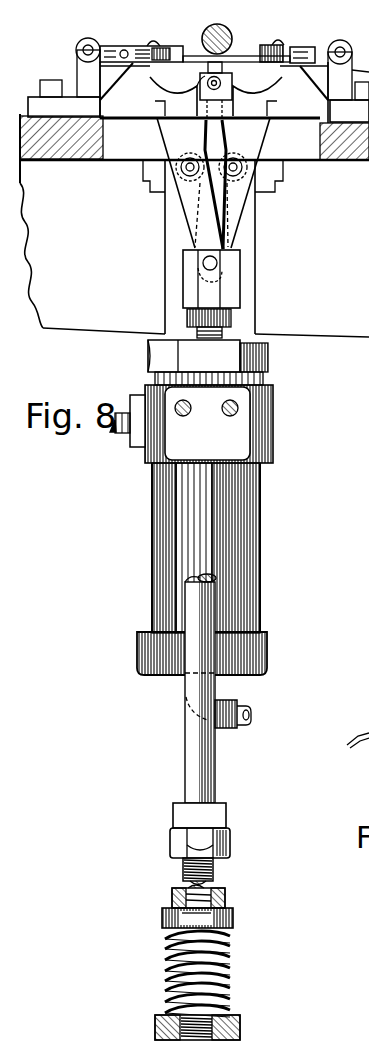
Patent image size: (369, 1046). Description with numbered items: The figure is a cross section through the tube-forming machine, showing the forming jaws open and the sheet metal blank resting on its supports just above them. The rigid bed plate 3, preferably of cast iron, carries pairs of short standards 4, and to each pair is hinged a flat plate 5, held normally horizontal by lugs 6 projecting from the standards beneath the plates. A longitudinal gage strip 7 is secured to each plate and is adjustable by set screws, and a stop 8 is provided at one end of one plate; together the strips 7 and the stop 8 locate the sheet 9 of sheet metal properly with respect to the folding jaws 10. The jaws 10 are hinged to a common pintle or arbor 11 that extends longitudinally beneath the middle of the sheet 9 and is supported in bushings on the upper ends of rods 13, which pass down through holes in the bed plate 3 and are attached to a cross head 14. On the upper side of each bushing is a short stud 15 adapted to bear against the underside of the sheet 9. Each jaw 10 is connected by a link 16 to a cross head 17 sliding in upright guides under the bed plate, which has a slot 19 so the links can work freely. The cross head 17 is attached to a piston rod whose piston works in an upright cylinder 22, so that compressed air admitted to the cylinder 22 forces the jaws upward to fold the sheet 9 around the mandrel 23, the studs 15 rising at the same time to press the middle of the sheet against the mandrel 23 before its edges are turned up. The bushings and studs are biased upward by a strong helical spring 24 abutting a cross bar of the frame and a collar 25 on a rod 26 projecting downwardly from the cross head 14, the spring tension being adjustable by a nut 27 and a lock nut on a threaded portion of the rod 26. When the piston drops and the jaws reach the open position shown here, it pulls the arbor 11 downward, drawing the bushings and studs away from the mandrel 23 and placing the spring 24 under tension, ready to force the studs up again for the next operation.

The bed plate 3 is at (366, 178).
The short standards 4 is at (78, 67).
The flat plate 5 is at (120, 46).
The lugs 6 is at (108, 85).
The longitudinal gage strip 7 is at (264, 46).
The stop 8 is at (176, 46).
The sheet 9 is at (233, 56).
The folding jaws 10 is at (175, 97).
The pintle or arbor 11 is at (207, 80).
The rods 13 is at (188, 748).
The cross head 14 is at (175, 813).
The stud 15 is at (225, 70).
The link 16 is at (190, 208).
The cross head 17 is at (233, 282).
The slot 19 is at (194, 199).
The upright cylinder 22 is at (155, 539).
The mandrel 23 is at (217, 24).
The helical spring 24 is at (163, 972).
The collar 25 is at (162, 917).
The rod 26 is at (213, 872).
The nut 27 is at (227, 900).